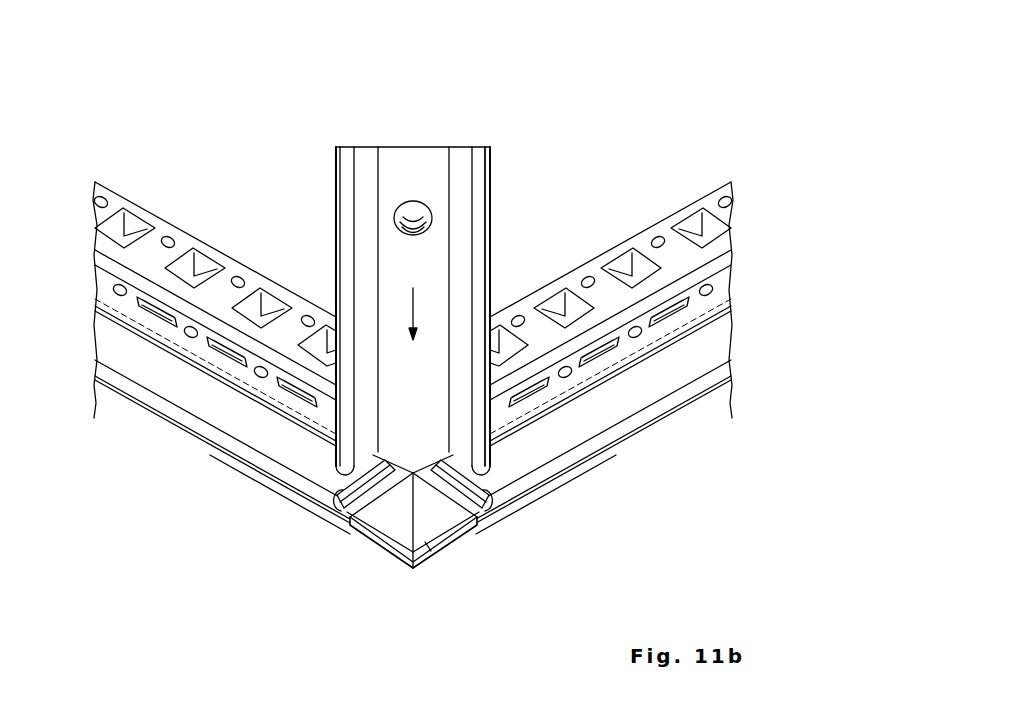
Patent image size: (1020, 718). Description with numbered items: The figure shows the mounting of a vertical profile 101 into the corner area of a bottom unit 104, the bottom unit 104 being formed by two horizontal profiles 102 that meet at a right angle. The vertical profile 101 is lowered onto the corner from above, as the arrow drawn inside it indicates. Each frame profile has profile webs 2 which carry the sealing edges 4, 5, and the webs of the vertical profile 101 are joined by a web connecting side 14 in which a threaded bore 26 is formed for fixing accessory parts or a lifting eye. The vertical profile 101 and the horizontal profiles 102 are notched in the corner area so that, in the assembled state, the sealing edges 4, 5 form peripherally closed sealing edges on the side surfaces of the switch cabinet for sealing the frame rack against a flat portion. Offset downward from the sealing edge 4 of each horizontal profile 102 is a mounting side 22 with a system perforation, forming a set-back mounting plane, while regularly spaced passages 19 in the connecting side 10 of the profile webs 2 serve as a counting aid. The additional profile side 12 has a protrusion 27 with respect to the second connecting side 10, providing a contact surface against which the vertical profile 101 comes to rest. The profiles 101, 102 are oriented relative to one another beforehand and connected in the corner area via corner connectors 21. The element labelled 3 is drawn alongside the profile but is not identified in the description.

The bottom unit 104 is at (640, 72).
The vertical profile 101 is at (445, 283).
The web connecting side 14 is at (416, 147).
The threaded bore 26 is at (432, 225).
The profile web 2 is at (490, 262).
The transverse beam 3 is at (336, 262).
The sealing edge 4 is at (336, 183).
The sealing edge 5 is at (490, 183).
The horizontal profile 102 is at (160, 238).
The mounting side 22 is at (200, 250).
The passages 19 is at (208, 388).
The connecting side 10 is at (340, 500).
The protrusion 27 is at (360, 518).
The additional profile side 12 is at (366, 533).
The corner connector 21 is at (432, 552).